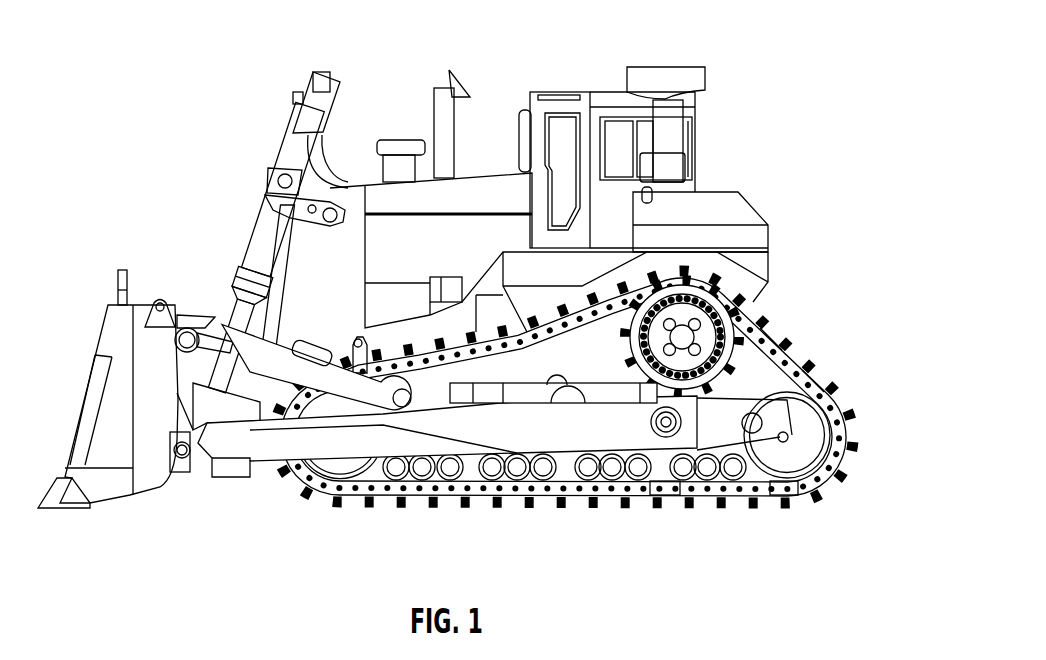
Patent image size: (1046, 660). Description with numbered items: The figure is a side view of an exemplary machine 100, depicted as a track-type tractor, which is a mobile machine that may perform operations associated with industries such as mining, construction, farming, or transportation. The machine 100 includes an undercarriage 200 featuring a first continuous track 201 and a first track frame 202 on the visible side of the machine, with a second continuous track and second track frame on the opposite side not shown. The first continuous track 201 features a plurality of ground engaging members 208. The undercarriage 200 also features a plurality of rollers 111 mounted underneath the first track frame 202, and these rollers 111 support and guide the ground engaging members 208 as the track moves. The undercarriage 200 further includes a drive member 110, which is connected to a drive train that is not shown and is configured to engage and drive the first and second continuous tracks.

The machine 100 is at (727, 53).
The drive member 110 is at (632, 343).
The rollers 111 is at (662, 483).
The undercarriage 200 is at (540, 507).
The first continuous track 201 is at (773, 331).
The first track frame 202 is at (783, 489).
The ground engaging members 208 is at (815, 374).